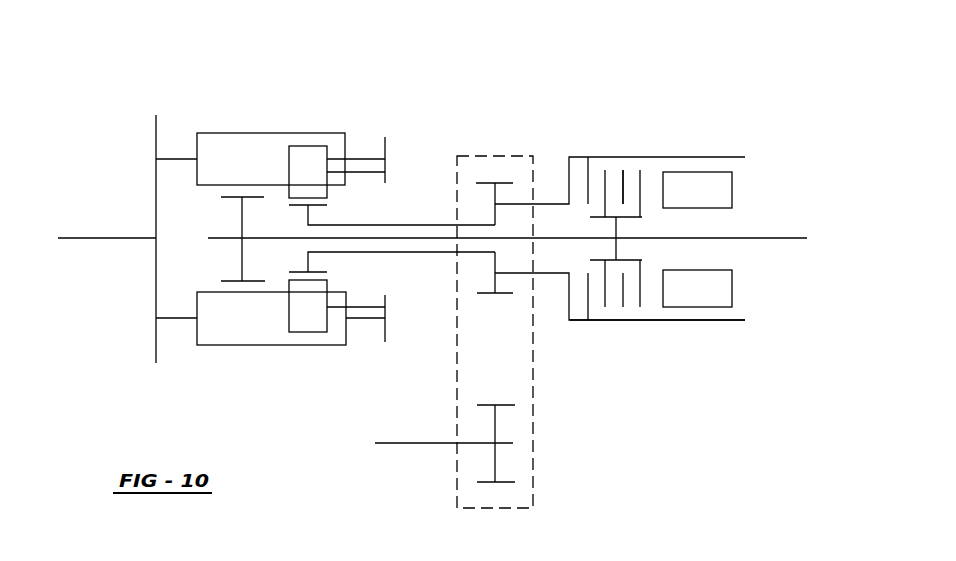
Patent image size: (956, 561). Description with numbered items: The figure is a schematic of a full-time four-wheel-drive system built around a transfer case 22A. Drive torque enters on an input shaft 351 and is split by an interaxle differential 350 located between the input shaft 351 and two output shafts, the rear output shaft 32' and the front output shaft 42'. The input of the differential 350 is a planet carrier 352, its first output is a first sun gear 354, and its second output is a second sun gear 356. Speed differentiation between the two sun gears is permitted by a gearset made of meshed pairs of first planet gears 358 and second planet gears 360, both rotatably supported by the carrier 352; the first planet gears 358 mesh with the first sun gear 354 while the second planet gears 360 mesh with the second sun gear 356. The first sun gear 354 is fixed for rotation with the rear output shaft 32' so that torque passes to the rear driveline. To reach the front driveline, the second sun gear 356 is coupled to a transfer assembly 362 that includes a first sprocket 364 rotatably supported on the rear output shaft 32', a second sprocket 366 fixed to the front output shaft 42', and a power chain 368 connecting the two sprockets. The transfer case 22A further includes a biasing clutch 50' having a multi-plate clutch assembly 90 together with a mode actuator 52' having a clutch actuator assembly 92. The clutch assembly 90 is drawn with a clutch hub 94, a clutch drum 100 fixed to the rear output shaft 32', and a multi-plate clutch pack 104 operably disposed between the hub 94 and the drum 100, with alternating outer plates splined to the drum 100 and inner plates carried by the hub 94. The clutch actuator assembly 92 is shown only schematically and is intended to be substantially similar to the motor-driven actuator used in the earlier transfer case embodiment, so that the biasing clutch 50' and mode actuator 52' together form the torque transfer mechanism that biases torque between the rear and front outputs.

The input shaft 351 is at (92, 238).
The planet carrier 352 is at (156, 140).
The interaxle differential 350 is at (296, 128).
The first planet gears 358 is at (240, 152).
The first sun gear 354 is at (242, 218).
The second sun gear 356 is at (316, 218).
The second planet gears 360 is at (306, 318).
The rear output shaft 32' is at (509, 223).
The transfer assembly 362 is at (552, 347).
The power chain 368 is at (513, 508).
The first sprocket 364 is at (505, 181).
The second sprocket 366 is at (497, 428).
The front output shaft 42' is at (442, 426).
The transfer case 22A is at (702, 198).
The biasing clutch 50' is at (631, 154).
The multi-plate clutch pack 104 is at (628, 168).
The clutch hub 94 is at (619, 226).
The multi-plate friction clutch assembly 90 is at (606, 332).
The clutch drum 100 is at (715, 322).
The mode actuator 52' is at (748, 177).
The clutch actuator assembly 92 is at (722, 289).